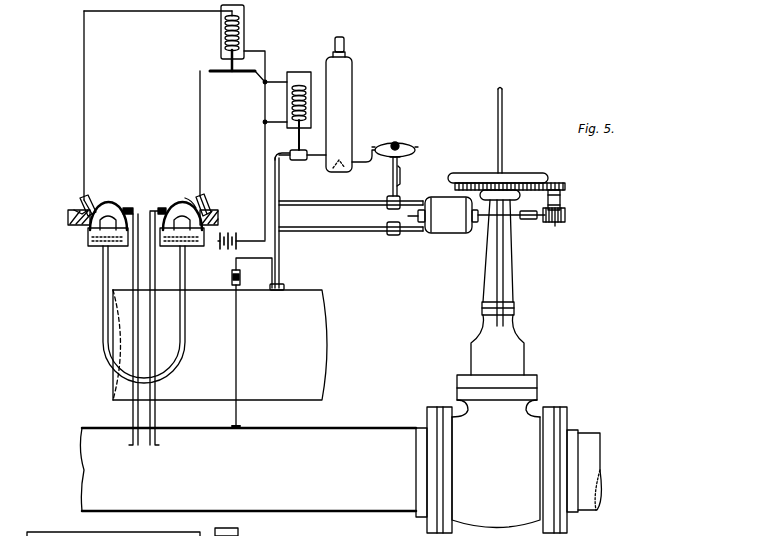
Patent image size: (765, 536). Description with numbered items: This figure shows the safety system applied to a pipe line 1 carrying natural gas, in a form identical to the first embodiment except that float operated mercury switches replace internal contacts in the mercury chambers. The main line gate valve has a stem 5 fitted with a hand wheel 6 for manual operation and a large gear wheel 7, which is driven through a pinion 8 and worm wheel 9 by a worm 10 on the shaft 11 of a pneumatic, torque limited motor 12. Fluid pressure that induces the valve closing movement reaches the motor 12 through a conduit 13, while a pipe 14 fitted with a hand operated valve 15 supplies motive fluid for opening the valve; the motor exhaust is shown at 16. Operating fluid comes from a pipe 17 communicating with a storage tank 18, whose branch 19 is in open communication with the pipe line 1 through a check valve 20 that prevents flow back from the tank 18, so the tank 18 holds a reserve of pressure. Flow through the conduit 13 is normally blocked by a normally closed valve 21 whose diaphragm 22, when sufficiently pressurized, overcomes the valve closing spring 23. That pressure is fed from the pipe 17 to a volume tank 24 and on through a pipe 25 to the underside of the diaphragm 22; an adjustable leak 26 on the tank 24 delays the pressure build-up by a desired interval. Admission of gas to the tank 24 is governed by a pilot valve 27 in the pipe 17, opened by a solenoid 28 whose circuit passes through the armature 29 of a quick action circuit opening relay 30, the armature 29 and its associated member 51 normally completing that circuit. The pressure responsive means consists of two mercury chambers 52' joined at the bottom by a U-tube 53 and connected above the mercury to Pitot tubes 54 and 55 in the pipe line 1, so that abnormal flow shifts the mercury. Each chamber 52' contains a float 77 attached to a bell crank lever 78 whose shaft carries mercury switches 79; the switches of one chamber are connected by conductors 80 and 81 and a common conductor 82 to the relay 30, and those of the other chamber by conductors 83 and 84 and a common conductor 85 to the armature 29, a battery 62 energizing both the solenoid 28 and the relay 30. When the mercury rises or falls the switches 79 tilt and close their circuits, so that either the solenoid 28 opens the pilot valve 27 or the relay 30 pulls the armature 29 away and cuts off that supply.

The pipe line 1 is at (84, 458).
The valve stem 5 is at (502, 112).
The hand wheel 6 is at (543, 176).
The gear wheel 7 is at (516, 185).
The pinion 8 is at (560, 188).
The worm wheel 9 is at (560, 222).
The worm 10 is at (562, 210).
The motor shaft 11 is at (520, 220).
The motor 12 is at (458, 232).
The conduit 13 is at (335, 205).
The pipe 14 is at (366, 228).
The hand operated valve 15 is at (392, 235).
The exhaust 16 is at (413, 218).
The pipe 17 is at (279, 272).
The storage tank 18 is at (330, 393).
The branch pipe 19 is at (238, 415).
The check valve 20 is at (240, 278).
The normally closed valve 21 is at (392, 192).
The diaphragm 22 is at (410, 146).
The valve closing spring 23 is at (396, 142).
The volume tank 24 is at (352, 78).
The pipe 25 is at (363, 148).
The adjustable leak 26 is at (344, 44).
The pilot valve 27 is at (290, 155).
The solenoid 28 is at (308, 66).
The armature 29 is at (218, 76).
The quick action circuit opening relay 30 is at (247, 28).
The link 51 is at (258, 80).
The mercury cup 52' is at (136, 249).
The U-tube 53 is at (103, 360).
The electrode 54 is at (131, 447).
The electrode 55 is at (157, 447).
The battery 62 is at (240, 245).
The float 77 is at (128, 208).
The bell crank lever 78 is at (110, 204).
The mercury switches 79 is at (68, 216).
The conductor 80 is at (90, 200).
The conductor 81 is at (74, 208).
The common conductor 82 is at (84, 108).
The conductor 83 is at (188, 198).
The conductor 84 is at (207, 200).
The common conductor 85 is at (200, 127).